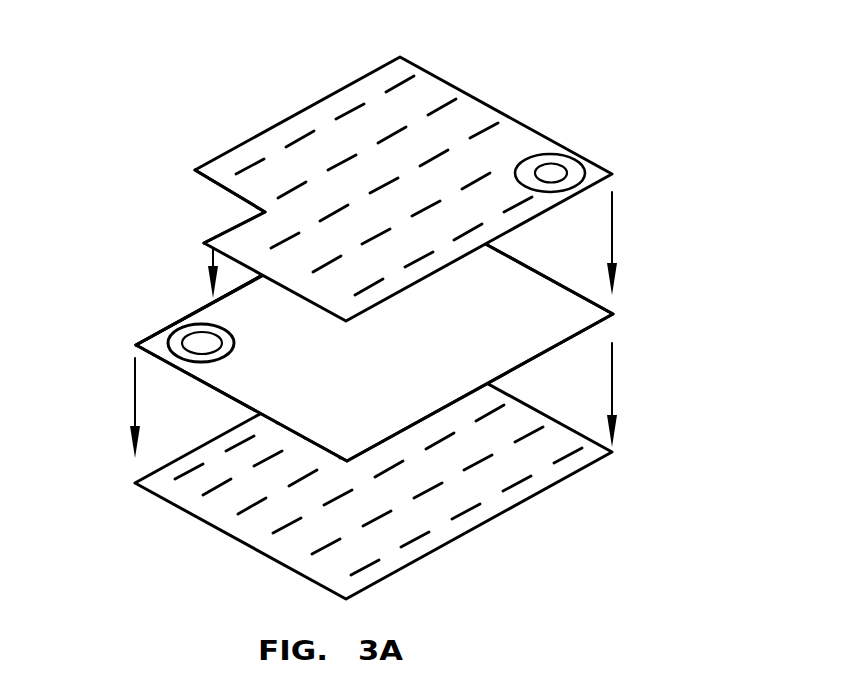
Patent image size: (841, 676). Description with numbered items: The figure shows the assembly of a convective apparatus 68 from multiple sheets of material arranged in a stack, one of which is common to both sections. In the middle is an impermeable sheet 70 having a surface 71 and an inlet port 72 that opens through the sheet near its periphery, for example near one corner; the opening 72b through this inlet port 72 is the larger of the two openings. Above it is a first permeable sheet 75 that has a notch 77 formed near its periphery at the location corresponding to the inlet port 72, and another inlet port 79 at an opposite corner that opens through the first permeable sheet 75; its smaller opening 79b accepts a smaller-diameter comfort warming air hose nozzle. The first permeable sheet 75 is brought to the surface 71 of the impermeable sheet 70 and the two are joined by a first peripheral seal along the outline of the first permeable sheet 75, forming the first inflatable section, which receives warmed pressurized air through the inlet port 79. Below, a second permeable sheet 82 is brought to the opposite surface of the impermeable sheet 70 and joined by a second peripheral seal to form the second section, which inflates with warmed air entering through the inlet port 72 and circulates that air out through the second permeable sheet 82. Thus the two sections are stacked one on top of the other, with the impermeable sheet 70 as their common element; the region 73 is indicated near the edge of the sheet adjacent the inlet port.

The convective apparatus 68 is at (732, 477).
The impermeable sheet 70 is at (598, 318).
The surface 71 is at (508, 287).
The inlet port 72 is at (170, 303).
The opening 72b is at (200, 343).
The edge region of middle plate 73 is at (160, 342).
The first permeable sheet 75 is at (325, 106).
The notch 77 is at (225, 187).
The inlet port 79 is at (596, 167).
The opening 79b is at (550, 170).
The second permeable sheet 82 is at (552, 478).